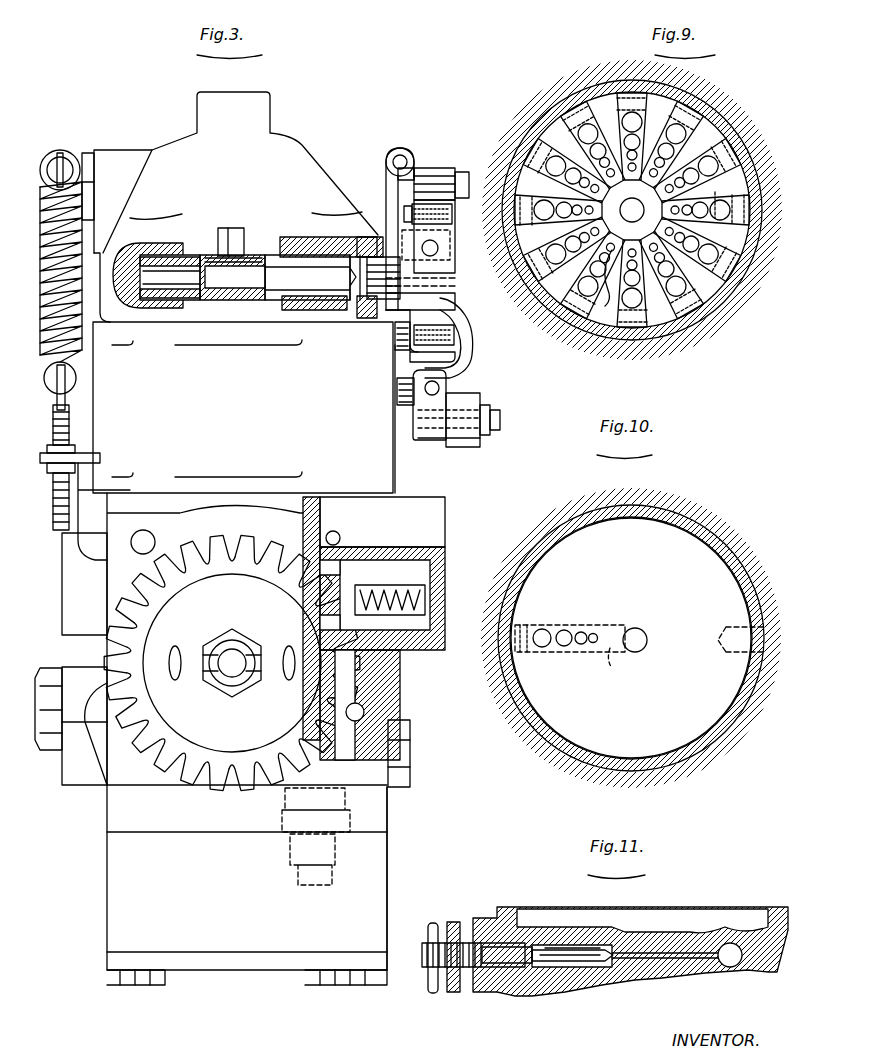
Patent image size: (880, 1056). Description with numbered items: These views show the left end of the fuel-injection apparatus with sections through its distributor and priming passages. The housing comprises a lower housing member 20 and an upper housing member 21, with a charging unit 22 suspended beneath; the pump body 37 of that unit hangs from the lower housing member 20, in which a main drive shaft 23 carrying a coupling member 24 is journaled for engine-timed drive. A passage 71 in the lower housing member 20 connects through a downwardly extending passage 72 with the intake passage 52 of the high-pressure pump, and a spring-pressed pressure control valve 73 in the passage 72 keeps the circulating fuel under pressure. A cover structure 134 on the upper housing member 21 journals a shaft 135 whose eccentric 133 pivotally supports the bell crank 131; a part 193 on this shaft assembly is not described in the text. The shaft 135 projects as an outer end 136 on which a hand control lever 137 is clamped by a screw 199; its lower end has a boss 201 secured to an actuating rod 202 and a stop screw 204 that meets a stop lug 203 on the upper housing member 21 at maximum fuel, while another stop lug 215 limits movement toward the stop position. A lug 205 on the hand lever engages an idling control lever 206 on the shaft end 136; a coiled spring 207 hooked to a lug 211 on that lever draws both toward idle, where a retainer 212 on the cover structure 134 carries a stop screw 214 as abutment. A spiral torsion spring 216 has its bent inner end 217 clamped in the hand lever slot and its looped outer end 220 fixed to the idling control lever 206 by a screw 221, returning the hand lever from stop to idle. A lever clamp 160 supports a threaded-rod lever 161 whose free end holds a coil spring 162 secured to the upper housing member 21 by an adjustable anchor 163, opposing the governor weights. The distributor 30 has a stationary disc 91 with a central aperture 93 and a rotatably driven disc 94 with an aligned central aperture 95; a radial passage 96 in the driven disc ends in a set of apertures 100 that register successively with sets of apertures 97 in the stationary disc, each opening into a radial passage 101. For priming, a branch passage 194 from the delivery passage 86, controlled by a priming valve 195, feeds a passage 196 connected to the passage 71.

In FIG. 3, the lever 161 is at (60, 155).
In FIG. 3, the lever clamp 160 is at (88, 153).
In FIG. 3, the coil spring 162 is at (84, 350).
In FIG. 3, the adjustable anchor 163 is at (70, 408).
In FIG. 3, the cover structure 134 is at (290, 150).
In FIG. 3, the boss 193 is at (228, 240).
In FIG. 3, the shaft 135 is at (300, 250).
In FIG. 3, the bell crank 131 is at (222, 300).
In FIG. 3, the eccentric 133 is at (240, 302).
In FIG. 3, the lug 205 is at (365, 240).
In FIG. 3, the stop screw 214 is at (398, 150).
In FIG. 3, the retainer 212 is at (375, 210).
In FIG. 3, the idling control lever 206 is at (414, 170).
In FIG. 3, the looped outer end 220 is at (420, 180).
In FIG. 3, the coiled spring 207 is at (430, 205).
In FIG. 3, the lug 211 is at (440, 230).
In FIG. 3, the screw 221 is at (460, 185).
In FIG. 3, the spiral torsion spring 216 is at (452, 216).
In FIG. 3, the screw 199 is at (438, 242).
In FIG. 3, the bent inner end 217 is at (445, 270).
In FIG. 3, the outer end of shaft 136 is at (450, 294).
In FIG. 3, the hand control lever 137 is at (468, 352).
In FIG. 3, the stop lug 203 is at (468, 365).
In FIG. 3, the stop lug 215 is at (400, 345).
In FIG. 3, the stop screw 204 is at (425, 388).
In FIG. 3, the boss 201 is at (465, 440).
In FIG. 3, the rod 202 is at (492, 440).
In FIG. 3, the upper housing member 21 is at (350, 465).
In FIG. 9, the upper housing member 21 is at (740, 300).
In FIG. 10, the upper housing member 21 is at (735, 752).
In FIG. 3, the passage 71 is at (340, 538).
In FIG. 11, the passage 71 is at (520, 985).
In FIG. 3, the pressure control valve 73 is at (447, 612).
In FIG. 3, the downwardly extending passage 72 is at (380, 675).
In FIG. 3, the passage 52 is at (365, 712).
In FIG. 3, the lower housing member 20 is at (130, 770).
In FIG. 11, the lower housing member 20 is at (580, 993).
In FIG. 3, the coupling member 24 is at (215, 765).
In FIG. 3, the main drive shaft 23 is at (235, 660).
In FIG. 3, the pump body 37 is at (115, 886).
In FIG. 3, the charging unit 22 is at (388, 876).
In FIG. 9, the distributor 30 is at (712, 335).
In FIG. 10, the distributor 30 is at (740, 532).
In FIG. 9, the stationary disc 91 is at (700, 140).
In FIG. 9, the central aperture 93 is at (632, 202).
In FIG. 9, the radial passage 101 is at (712, 190).
In FIG. 9, the set of apertures 97 is at (605, 300).
In FIG. 10, the rotatably driven disc 94 is at (700, 580).
In FIG. 10, the central aperture 95 is at (645, 632).
In FIG. 10, the set of apertures 100 is at (593, 648).
In FIG. 10, the radial passage 96 is at (612, 668).
In FIG. 11, the passage 196 is at (570, 945).
In FIG. 11, the priming valve 195 is at (585, 961).
In FIG. 11, the branch passage 194 is at (668, 965).
In FIG. 11, the passage 86 is at (732, 968).